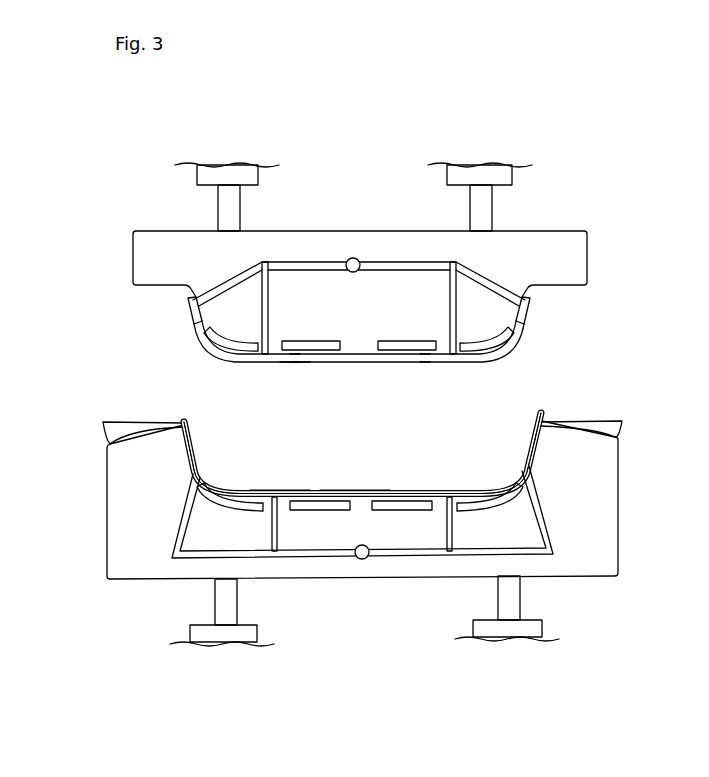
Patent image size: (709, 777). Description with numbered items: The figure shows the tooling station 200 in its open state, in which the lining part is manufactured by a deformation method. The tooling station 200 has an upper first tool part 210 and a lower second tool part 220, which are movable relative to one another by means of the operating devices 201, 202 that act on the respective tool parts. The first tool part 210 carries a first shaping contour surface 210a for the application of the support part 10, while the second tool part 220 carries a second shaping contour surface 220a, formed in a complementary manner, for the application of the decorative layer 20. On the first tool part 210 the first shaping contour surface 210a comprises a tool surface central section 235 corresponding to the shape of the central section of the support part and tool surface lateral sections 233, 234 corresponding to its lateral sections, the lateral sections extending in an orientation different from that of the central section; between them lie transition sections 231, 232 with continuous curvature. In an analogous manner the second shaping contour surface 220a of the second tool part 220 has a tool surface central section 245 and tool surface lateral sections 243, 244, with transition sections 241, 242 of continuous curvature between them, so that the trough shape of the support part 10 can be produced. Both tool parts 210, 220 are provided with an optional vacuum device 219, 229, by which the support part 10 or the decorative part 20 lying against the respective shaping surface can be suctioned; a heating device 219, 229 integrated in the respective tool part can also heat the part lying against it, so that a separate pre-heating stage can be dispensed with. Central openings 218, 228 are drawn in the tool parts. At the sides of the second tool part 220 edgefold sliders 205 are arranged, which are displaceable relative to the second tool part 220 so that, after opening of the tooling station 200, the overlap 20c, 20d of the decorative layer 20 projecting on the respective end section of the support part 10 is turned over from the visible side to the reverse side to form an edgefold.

The tooling station 200 is at (477, 89).
The operating device 201 is at (199, 161).
The operating device 202 is at (221, 649).
The first tool part 210 is at (580, 259).
The second tool part 220 is at (598, 556).
The support part 10 is at (530, 322).
The decorative layer 20 is at (542, 410).
The upper port 218 is at (353, 256).
The lower port 228 is at (362, 561).
The vacuum device 219 is at (248, 344).
The vacuum device 229 is at (238, 513).
The edgefold slider 205 is at (112, 415).
The overlap of the decorative layer 20c is at (192, 416).
The overlap of the decorative layer 20d is at (528, 412).
The transition section 231 is at (493, 357).
The transition section 232 is at (208, 349).
The tool surface lateral section 233 is at (535, 303).
The tool surface lateral section 234 is at (194, 319).
The tool surface central section 235 is at (372, 364).
The first shaping contour surface 210a is at (292, 364).
The second shaping contour surface 220a is at (278, 489).
The transition section 241 is at (501, 478).
The transition section 242 is at (213, 480).
The tool surface lateral section 243 is at (529, 436).
The tool surface lateral section 244 is at (199, 446).
The tool surface central section 245 is at (351, 489).